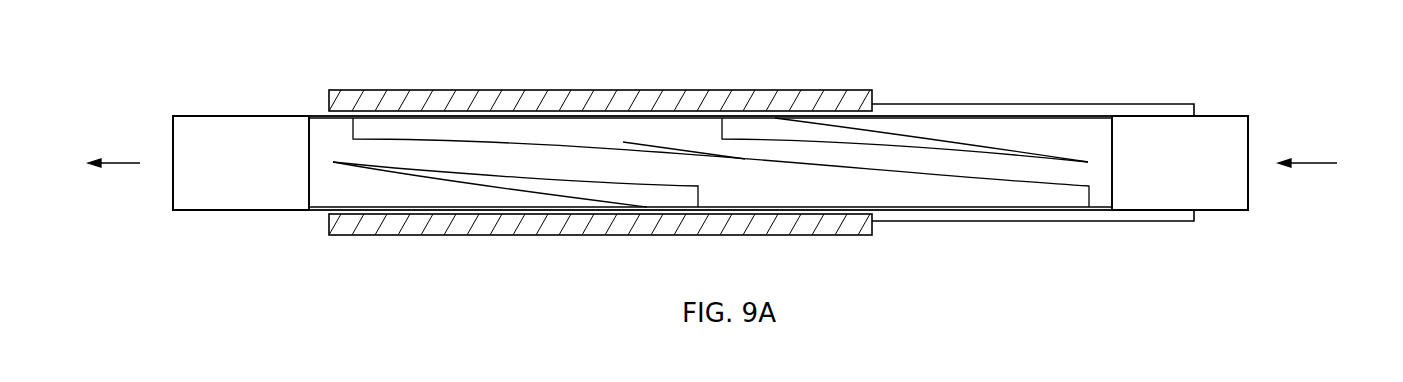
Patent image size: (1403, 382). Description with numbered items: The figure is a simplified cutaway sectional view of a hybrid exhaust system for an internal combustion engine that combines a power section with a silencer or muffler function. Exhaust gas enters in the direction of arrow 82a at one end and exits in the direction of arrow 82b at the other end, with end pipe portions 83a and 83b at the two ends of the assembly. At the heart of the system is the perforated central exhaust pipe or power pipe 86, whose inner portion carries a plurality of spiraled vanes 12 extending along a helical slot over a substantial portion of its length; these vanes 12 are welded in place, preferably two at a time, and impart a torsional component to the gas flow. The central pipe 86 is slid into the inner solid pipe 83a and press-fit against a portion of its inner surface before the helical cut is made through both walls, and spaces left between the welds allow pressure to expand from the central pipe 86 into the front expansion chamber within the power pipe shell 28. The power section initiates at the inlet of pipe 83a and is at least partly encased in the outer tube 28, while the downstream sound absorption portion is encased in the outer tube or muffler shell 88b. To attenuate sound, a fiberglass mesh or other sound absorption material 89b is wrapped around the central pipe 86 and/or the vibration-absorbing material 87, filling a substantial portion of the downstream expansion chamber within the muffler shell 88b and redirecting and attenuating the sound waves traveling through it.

The spiraled vanes 12 is at (357, 167).
The exterior shell pipe 28 is at (1149, 105).
The incoming exhaust gas flow arrow 82a is at (1312, 163).
The exiting exhaust gas flow arrow 82b is at (118, 163).
The inner solid pipe 83a is at (1222, 116).
The second end tube 83b is at (249, 116).
The perforated central exhaust pipe 86 is at (1043, 127).
The vibration-absorbing material 87 is at (330, 216).
The exterior muffler shell 88b is at (463, 90).
The sound absorption material 89b is at (584, 103).